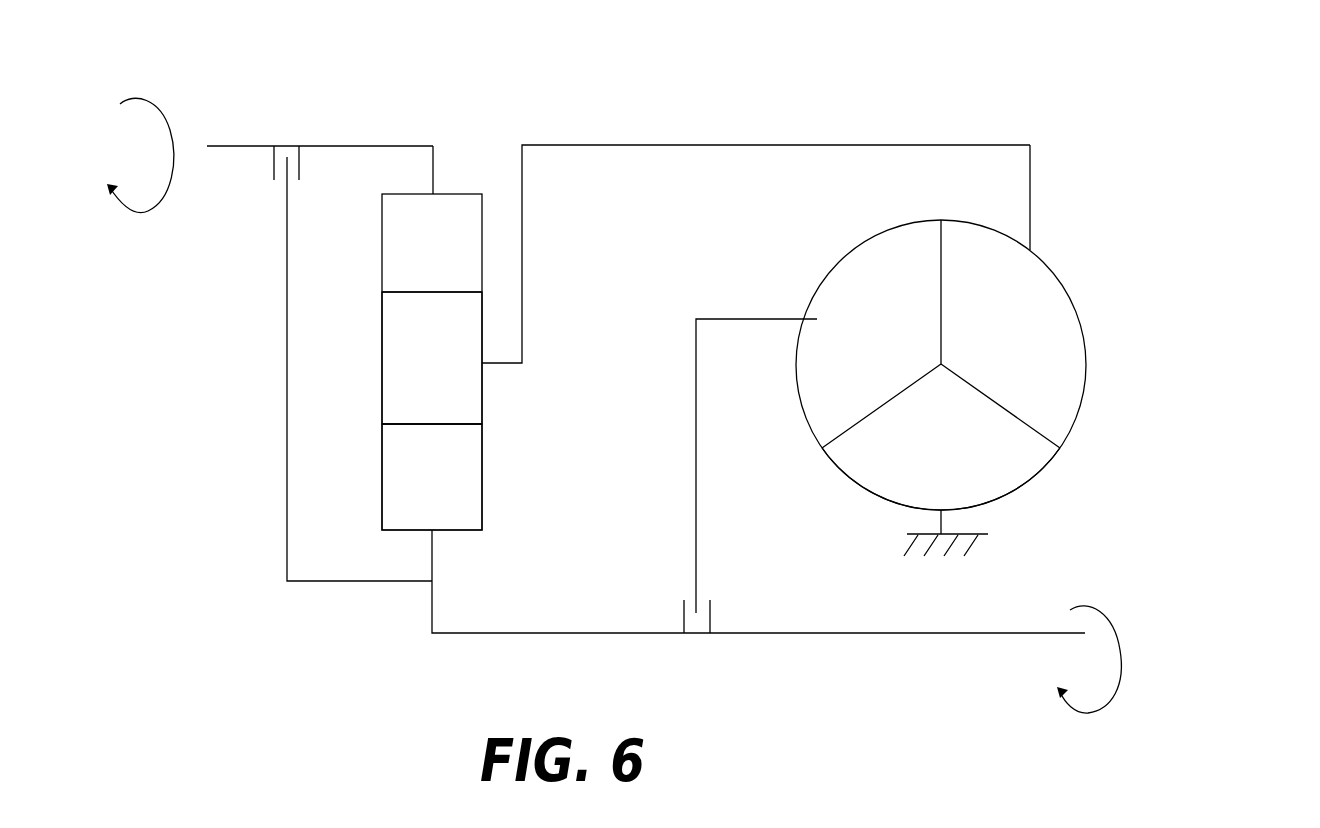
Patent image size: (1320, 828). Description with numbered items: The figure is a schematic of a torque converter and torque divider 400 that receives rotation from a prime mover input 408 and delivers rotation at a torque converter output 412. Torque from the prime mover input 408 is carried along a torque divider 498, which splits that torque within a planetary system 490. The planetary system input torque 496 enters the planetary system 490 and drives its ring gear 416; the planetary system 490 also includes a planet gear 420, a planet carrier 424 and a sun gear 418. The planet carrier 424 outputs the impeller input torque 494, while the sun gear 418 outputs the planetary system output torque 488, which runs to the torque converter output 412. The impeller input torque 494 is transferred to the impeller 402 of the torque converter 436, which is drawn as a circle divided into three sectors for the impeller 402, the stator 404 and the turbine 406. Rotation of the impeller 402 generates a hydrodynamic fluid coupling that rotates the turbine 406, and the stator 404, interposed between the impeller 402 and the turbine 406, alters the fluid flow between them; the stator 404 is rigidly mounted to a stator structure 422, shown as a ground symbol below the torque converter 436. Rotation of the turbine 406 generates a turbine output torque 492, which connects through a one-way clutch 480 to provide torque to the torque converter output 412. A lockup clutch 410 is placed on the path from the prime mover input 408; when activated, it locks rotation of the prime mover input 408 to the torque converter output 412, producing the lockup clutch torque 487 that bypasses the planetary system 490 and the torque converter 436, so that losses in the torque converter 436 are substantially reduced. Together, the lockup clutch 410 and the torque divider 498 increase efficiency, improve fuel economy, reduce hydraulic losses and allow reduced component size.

The torque converter and torque divider 400 is at (992, 98).
The impeller 402 is at (1040, 376).
The stator 404 is at (968, 486).
The turbine 406 is at (893, 376).
The prime mover input 408 is at (159, 155).
The lockup clutch 410 is at (330, 106).
The torque converter output 412 is at (1178, 647).
The ring gear 416 is at (455, 279).
The sun gear 418 is at (455, 516).
The planet gear 420 is at (452, 379).
The stator structure 422 is at (975, 545).
The planet carrier 424 is at (452, 411).
The torque converter 436 is at (993, 365).
The one-way clutch 480 is at (672, 608).
The lockup clutch torque 487 is at (287, 442).
The planetary system output torque 488 is at (433, 556).
The planetary system 490 is at (393, 362).
The turbine output torque 492 is at (696, 398).
The impeller input torque 494 is at (1032, 182).
The planetary system input torque 496 is at (433, 172).
The torque divider 498 is at (503, 143).